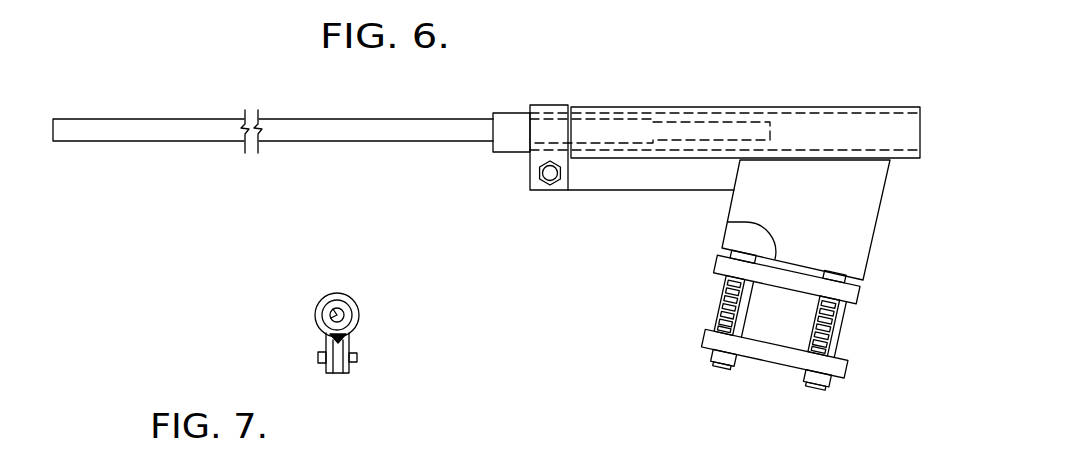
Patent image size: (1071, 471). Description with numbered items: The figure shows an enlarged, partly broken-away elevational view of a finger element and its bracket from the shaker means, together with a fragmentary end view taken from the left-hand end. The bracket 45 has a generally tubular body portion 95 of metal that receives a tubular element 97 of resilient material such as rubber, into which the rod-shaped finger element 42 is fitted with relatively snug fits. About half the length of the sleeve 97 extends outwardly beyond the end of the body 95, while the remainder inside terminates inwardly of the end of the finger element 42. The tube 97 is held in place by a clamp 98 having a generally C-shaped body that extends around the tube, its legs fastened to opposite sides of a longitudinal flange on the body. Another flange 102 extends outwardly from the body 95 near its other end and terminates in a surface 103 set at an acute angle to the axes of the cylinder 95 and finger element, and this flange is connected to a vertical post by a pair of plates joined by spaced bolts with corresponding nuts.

In FIG. 6, the finger element 42 is at (363, 126).
In FIG. 7, the finger element 42 is at (338, 306).
In FIG. 6, the bracket 45 is at (725, 100).
In FIG. 6, the tubular body portion 95 is at (779, 106).
In FIG. 6, the tubular element 97 is at (507, 120).
In FIG. 7, the tubular element 97 is at (355, 311).
In FIG. 6, the clamp 98 is at (545, 108).
In FIG. 7, the clamp 98 is at (358, 331).
In FIG. 6, the flange 102 is at (852, 220).
In FIG. 6, the surface 103 is at (728, 222).